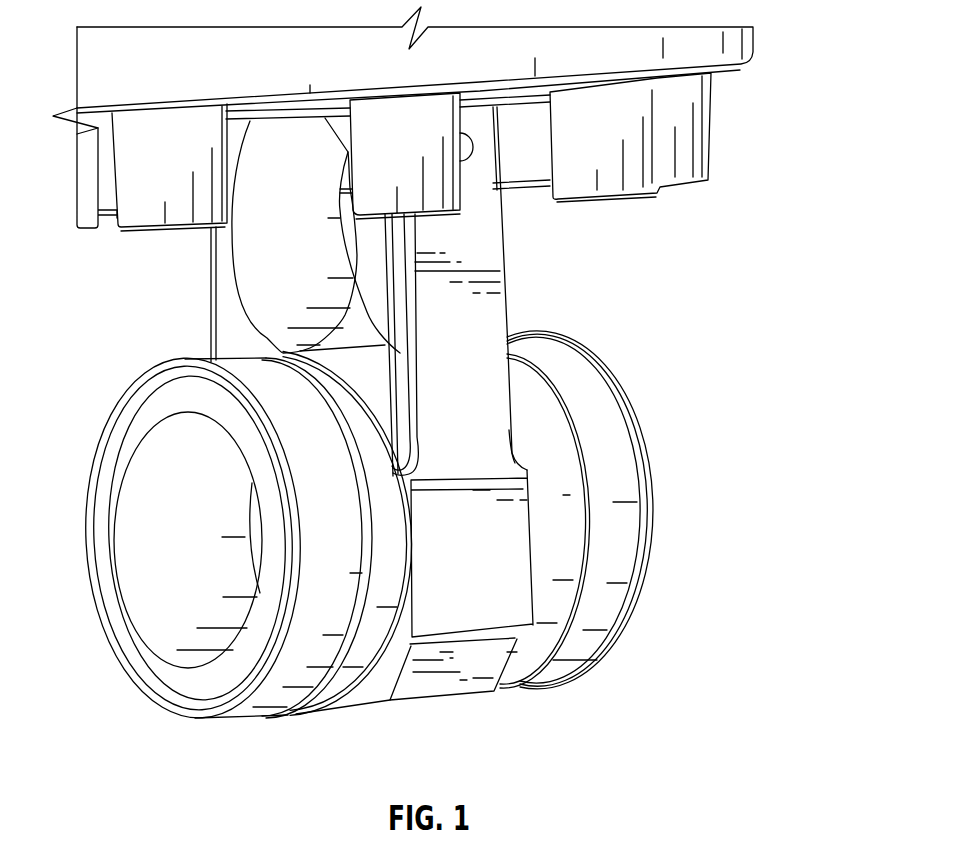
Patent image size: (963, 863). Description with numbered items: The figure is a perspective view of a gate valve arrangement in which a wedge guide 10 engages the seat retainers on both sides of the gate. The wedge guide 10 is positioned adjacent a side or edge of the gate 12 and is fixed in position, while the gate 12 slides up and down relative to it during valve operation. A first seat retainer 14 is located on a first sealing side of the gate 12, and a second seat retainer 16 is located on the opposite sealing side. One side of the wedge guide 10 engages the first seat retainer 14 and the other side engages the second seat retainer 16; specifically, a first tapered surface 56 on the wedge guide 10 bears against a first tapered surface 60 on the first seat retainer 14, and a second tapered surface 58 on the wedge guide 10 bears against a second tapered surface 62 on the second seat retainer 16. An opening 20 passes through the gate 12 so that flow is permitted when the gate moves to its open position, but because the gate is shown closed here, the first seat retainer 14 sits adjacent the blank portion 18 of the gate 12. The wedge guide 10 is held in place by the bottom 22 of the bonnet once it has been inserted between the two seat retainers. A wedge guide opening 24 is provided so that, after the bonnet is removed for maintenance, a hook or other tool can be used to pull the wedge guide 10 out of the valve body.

The wedge guide 10 is at (483, 250).
The gate 12 is at (230, 298).
The first seat retainer 14 is at (277, 700).
The second seat retainer 16 is at (627, 547).
The blank portion 18 is at (368, 340).
The opening 20 is at (297, 241).
The bottom of the bonnet 22 is at (742, 38).
The wedge guide opening 24 is at (473, 153).
The first tapered surface 56 is at (417, 587).
The second tapered surface 58 is at (527, 540).
The first tapered surface 60 is at (403, 553).
The second tapered surface 62 is at (530, 494).